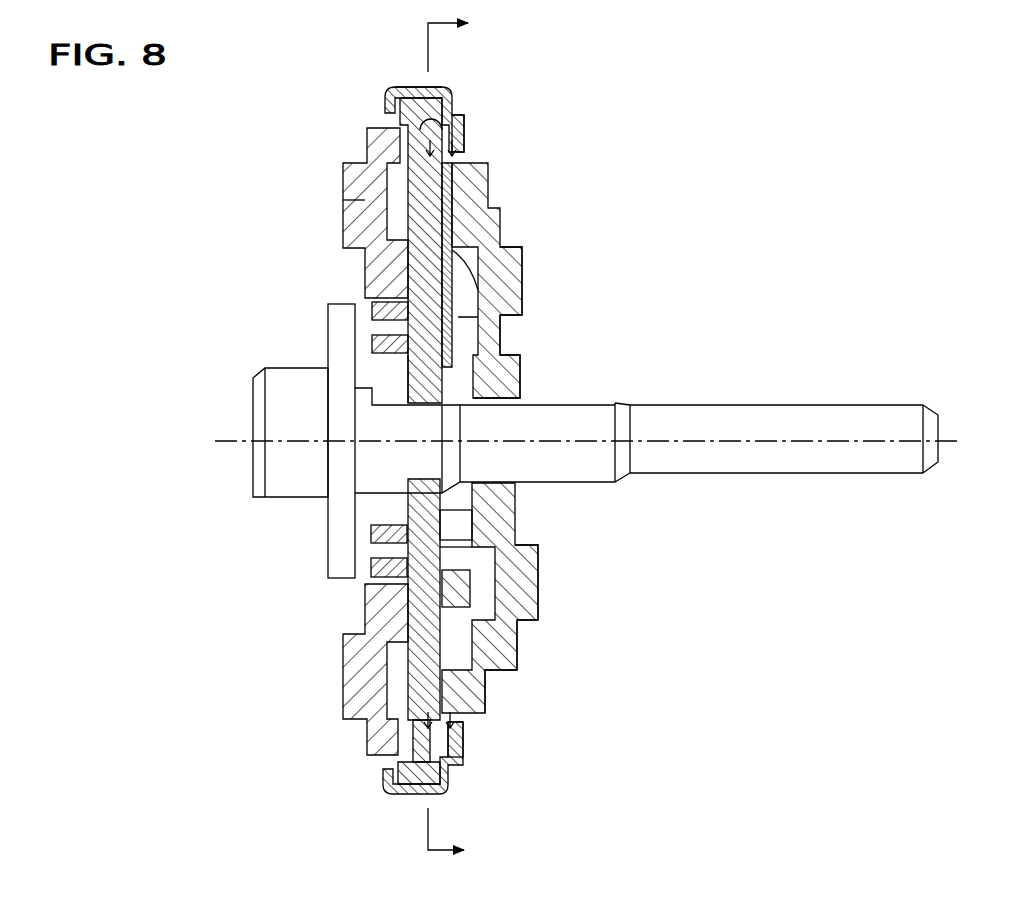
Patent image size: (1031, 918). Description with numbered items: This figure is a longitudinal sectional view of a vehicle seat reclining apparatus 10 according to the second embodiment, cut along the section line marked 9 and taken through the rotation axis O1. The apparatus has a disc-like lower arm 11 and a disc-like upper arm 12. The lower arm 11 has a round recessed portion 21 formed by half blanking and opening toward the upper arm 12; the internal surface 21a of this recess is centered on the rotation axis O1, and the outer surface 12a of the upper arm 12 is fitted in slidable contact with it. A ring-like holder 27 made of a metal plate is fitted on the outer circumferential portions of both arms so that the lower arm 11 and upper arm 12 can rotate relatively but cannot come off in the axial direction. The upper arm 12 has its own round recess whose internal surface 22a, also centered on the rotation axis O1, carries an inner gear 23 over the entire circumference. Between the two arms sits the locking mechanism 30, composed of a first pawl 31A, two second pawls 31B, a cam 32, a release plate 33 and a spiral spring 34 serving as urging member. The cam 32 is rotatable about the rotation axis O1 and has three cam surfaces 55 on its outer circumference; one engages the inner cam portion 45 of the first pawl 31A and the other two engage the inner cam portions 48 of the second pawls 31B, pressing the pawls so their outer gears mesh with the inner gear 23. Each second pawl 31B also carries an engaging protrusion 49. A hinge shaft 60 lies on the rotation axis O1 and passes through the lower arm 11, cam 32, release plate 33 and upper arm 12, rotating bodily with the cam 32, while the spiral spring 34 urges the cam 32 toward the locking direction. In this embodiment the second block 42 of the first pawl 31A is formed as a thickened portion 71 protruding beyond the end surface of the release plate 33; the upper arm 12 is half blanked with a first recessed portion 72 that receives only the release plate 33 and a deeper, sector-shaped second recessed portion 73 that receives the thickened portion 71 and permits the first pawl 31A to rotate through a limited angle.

The vehicle seat reclining apparatus 10 is at (584, 118).
The hinge shaft 60 is at (722, 410).
The rotation axis O1 is at (605, 442).
The lower arm 11 is at (348, 178).
The upper arm 12 is at (506, 514).
The outer surface 12a is at (396, 795).
The round recessed portion 21 is at (392, 108).
The internal surface 21a is at (458, 135).
The internal surface 22a is at (397, 708).
The inner gear 23 is at (450, 208).
The holder 27 is at (430, 87).
The locking mechanism 30 is at (404, 222).
The first pawl 31A is at (410, 650).
The second pawl 31B is at (400, 203).
The cam 32 is at (420, 368).
The release plate 33 is at (470, 300).
The spiral spring 34 is at (378, 533).
The second block 42 is at (462, 607).
The inner cam portion 45 is at (442, 567).
The inner cam portion 48 is at (424, 304).
The engaging protrusion 49 is at (478, 268).
The cam surfaces 55 is at (400, 304).
The thickened portion 71 is at (470, 580).
The first recessed portion 72 is at (480, 230).
The second recessed portion 73 is at (482, 650).
The section line 9- 9 is at (461, 441).